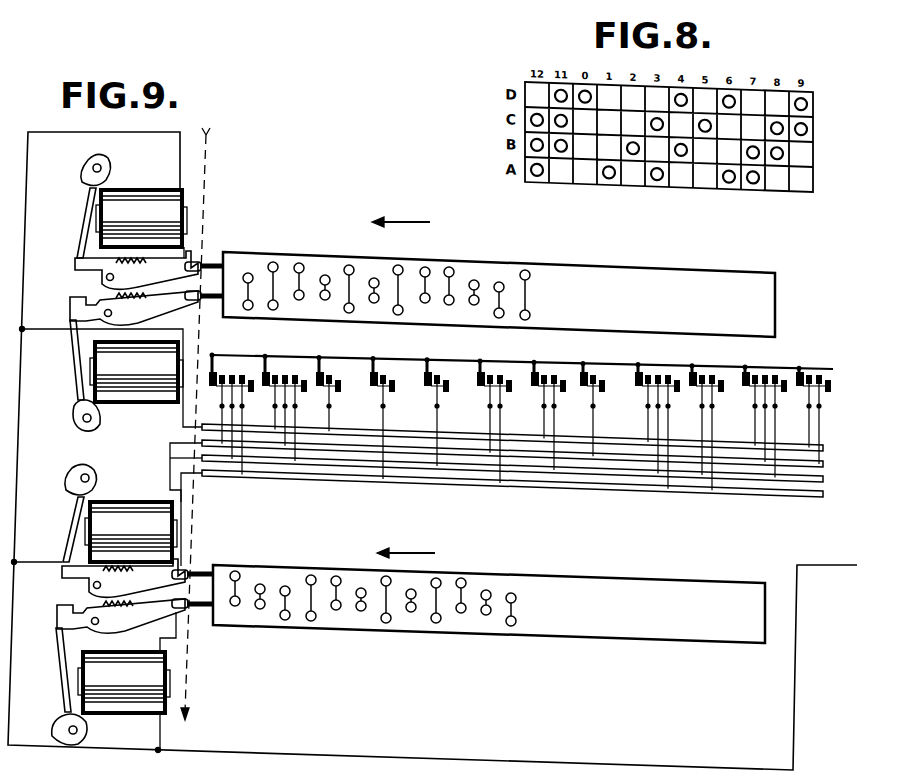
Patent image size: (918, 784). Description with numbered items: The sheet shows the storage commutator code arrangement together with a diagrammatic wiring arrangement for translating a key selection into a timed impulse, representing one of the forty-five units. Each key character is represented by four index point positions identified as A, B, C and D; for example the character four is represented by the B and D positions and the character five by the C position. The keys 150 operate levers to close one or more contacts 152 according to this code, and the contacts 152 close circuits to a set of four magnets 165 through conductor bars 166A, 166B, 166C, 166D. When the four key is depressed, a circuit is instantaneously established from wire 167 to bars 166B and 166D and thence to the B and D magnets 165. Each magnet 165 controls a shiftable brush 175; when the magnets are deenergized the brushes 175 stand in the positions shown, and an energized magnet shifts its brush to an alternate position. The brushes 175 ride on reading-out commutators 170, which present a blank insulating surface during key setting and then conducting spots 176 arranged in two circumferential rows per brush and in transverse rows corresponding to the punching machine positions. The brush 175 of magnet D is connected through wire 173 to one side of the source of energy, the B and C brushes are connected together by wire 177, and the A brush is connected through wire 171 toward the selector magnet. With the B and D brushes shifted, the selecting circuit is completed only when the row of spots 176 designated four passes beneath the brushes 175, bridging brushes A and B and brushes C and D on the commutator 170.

The keys 150 is at (385, 381).
The contacts 152 is at (330, 375).
The magnets 165 is at (133, 192).
The conductor bar 166A is at (767, 494).
The conductor bar 166B is at (788, 479).
The conductor bar 166C is at (803, 481).
The conductor bar 166D is at (534, 437).
The wire 167 is at (838, 366).
The reading-out commutator 170 is at (614, 280).
The wire 171 is at (188, 692).
The wire 173 is at (207, 200).
The shiftable brush 175 is at (160, 281).
The conducting spots 176 is at (327, 275).
The wire 177 is at (193, 522).